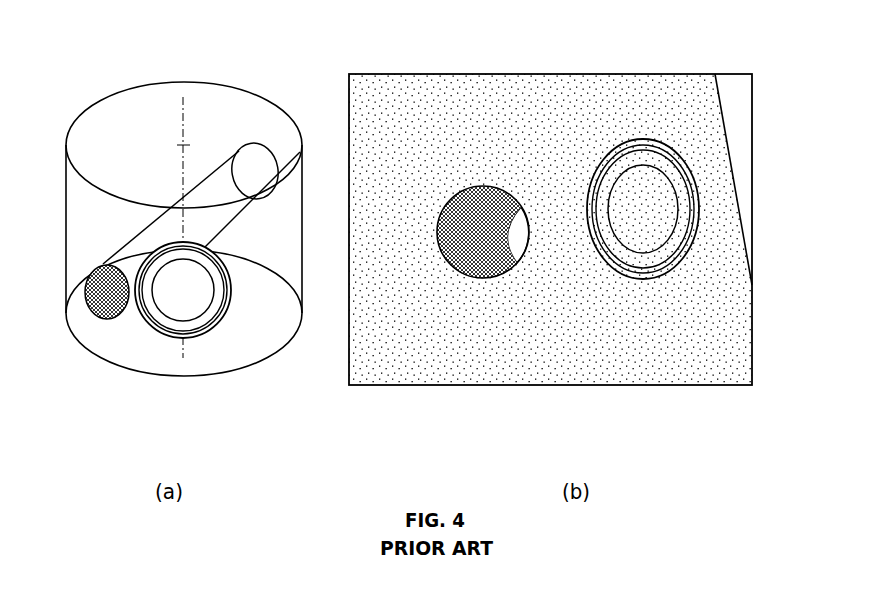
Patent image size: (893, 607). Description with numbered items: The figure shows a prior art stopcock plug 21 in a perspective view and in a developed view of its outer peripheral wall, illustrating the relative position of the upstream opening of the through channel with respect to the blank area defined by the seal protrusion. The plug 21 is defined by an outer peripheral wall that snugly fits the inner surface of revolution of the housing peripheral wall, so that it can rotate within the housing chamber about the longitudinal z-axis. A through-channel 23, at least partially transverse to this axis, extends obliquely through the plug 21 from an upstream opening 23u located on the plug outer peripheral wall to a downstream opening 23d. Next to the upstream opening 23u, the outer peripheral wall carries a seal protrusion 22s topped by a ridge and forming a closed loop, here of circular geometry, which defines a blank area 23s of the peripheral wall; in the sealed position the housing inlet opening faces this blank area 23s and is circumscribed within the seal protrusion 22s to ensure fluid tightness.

The plug 21 is at (115, 93).
The through-channel 23 is at (194, 228).
The downstream opening 23d is at (248, 168).
The upstream opening 23u is at (112, 320).
The seal protrusion 22s is at (205, 337).
The blank area 23s is at (176, 288).